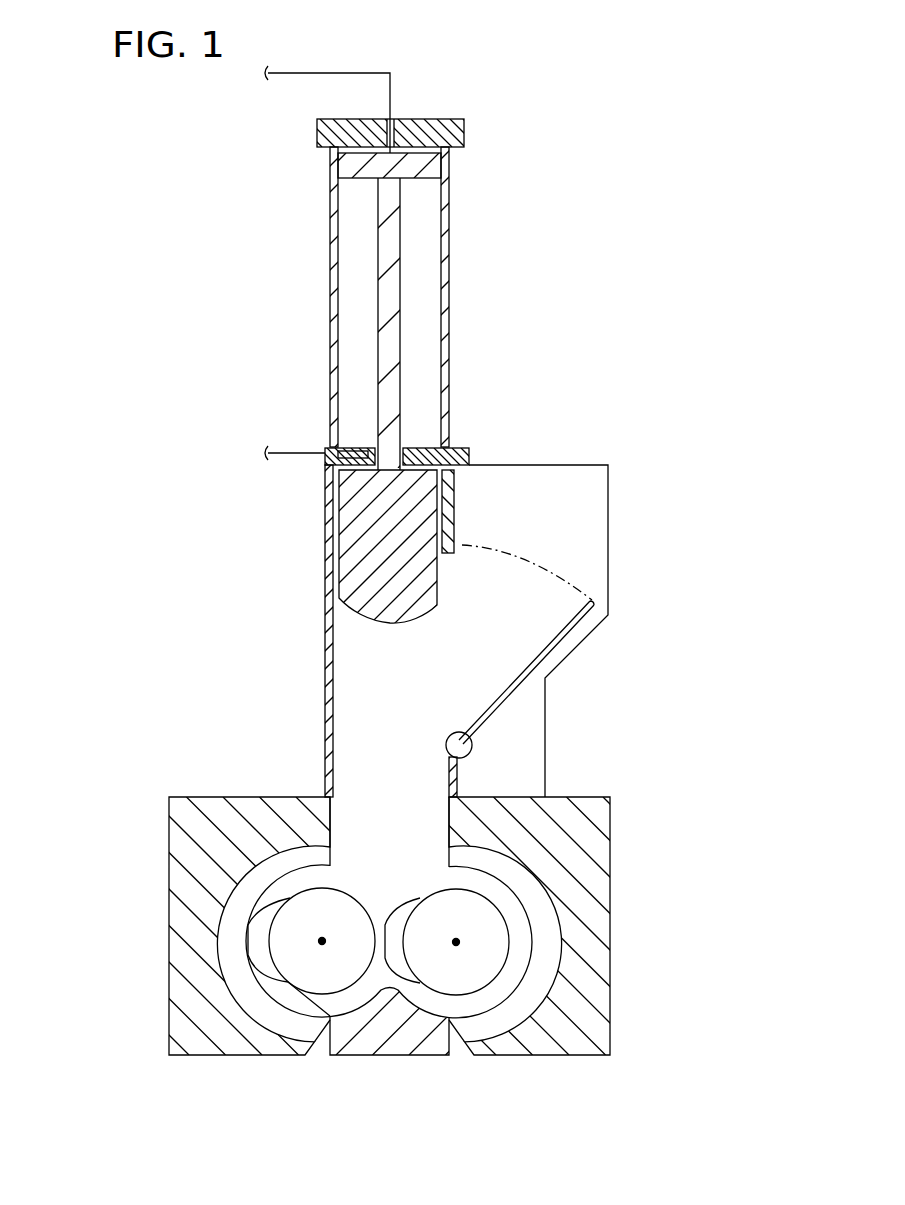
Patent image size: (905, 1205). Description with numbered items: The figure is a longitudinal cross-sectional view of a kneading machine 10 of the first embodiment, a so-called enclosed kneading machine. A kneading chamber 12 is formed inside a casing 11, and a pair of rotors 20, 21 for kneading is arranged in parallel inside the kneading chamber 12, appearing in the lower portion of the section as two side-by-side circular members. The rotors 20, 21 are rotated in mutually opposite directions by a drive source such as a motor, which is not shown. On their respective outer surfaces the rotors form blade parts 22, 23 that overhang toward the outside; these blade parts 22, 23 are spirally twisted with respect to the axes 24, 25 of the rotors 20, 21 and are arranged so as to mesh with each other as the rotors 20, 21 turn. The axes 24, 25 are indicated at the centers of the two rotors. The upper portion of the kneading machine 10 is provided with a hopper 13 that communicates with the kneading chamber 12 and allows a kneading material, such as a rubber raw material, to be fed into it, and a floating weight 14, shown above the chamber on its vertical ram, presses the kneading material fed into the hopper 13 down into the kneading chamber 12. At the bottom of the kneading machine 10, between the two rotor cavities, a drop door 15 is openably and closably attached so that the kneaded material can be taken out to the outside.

The kneading machine 10 is at (652, 198).
The casing 11 is at (611, 856).
The kneading chamber 12 is at (545, 981).
The hopper 13 is at (608, 532).
The floating weight 14 is at (357, 537).
The drop door 15 is at (420, 1057).
The rotor for kneading 20 is at (309, 884).
The rotor for kneading 21 is at (487, 895).
The blade part 22 is at (262, 947).
The blade part 23 is at (398, 955).
The axis 24 is at (322, 941).
The axis 25 is at (456, 942).